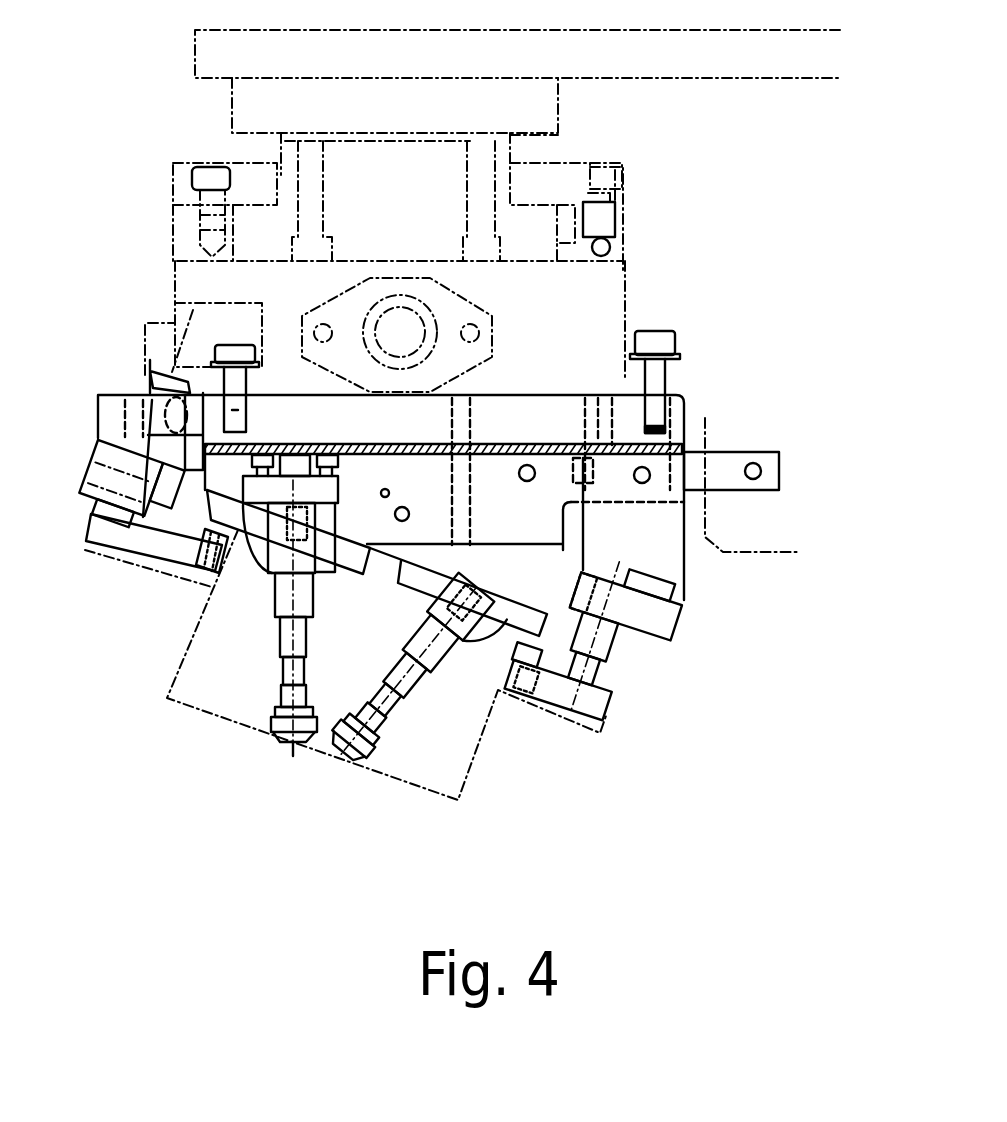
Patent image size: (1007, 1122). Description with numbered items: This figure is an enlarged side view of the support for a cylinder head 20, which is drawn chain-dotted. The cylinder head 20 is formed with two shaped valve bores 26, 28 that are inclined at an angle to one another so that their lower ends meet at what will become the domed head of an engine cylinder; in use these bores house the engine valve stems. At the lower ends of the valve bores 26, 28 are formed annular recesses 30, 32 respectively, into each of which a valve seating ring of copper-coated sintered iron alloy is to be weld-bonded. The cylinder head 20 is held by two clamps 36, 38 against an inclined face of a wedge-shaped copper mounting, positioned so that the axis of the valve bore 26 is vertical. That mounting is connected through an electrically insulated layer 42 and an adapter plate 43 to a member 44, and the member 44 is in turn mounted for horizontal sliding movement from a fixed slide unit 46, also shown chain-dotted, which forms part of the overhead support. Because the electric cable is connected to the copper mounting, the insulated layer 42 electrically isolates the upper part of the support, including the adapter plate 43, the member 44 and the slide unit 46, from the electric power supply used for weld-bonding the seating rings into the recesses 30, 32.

The cylinder head 20 is at (185, 703).
The valve bore 26 is at (275, 630).
The valve bore 28 is at (417, 687).
The annular recess 30 is at (283, 738).
The annular recess 32 is at (337, 752).
The clamp 36 is at (152, 551).
The clamp 38 is at (613, 707).
The electrically insulated layer 42 is at (617, 445).
The adapter plate 43 is at (523, 413).
The member 44 is at (205, 283).
The fixed slide unit 46 is at (232, 103).